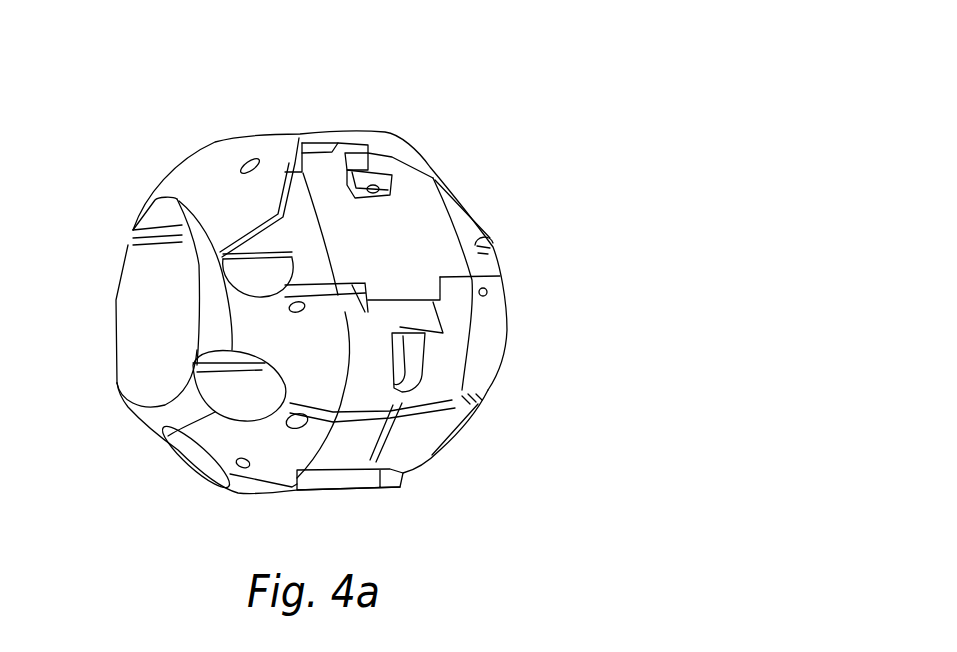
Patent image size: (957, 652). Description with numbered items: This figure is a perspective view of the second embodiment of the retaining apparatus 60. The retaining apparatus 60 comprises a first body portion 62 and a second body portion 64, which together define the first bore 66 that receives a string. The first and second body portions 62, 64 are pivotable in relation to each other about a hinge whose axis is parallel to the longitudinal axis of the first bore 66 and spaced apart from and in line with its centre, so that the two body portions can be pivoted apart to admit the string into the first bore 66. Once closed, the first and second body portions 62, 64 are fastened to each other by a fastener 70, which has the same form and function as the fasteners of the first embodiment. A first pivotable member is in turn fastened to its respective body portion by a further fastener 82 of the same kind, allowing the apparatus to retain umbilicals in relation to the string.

The retaining apparatus 60 is at (512, 98).
The first body portion 62 is at (148, 417).
The second body portion 64 is at (203, 185).
The first bore 66 is at (138, 305).
The fastener 70 is at (402, 401).
The fastener 82 is at (383, 181).